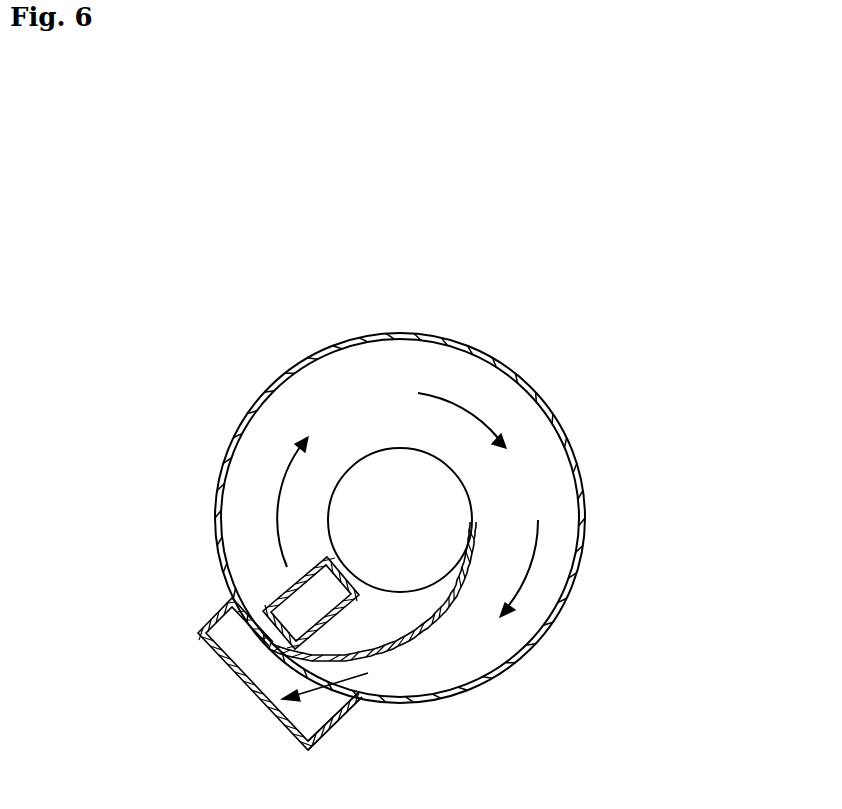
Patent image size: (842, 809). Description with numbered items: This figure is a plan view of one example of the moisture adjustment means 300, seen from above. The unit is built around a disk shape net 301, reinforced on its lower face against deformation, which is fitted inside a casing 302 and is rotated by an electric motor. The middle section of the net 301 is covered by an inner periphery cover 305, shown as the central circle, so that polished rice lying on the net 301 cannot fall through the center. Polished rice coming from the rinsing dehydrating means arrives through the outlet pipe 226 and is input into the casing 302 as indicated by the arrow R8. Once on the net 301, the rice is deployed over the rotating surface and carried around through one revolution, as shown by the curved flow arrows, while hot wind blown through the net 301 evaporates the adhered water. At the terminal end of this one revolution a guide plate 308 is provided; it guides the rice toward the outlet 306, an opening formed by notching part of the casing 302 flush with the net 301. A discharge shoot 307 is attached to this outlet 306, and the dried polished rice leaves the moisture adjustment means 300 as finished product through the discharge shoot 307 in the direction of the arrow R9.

The moisture adjustment means 300 is at (553, 398).
The disk shape net 301 is at (457, 377).
The casing 302 is at (562, 618).
The inner periphery cover 305 is at (457, 498).
The outlet 306 is at (315, 693).
The discharge shoot 307 is at (245, 680).
The guide plate 308 is at (433, 621).
The outlet pipe 226 is at (335, 617).
The arrow R8 is at (277, 520).
The arrow R9 is at (297, 698).